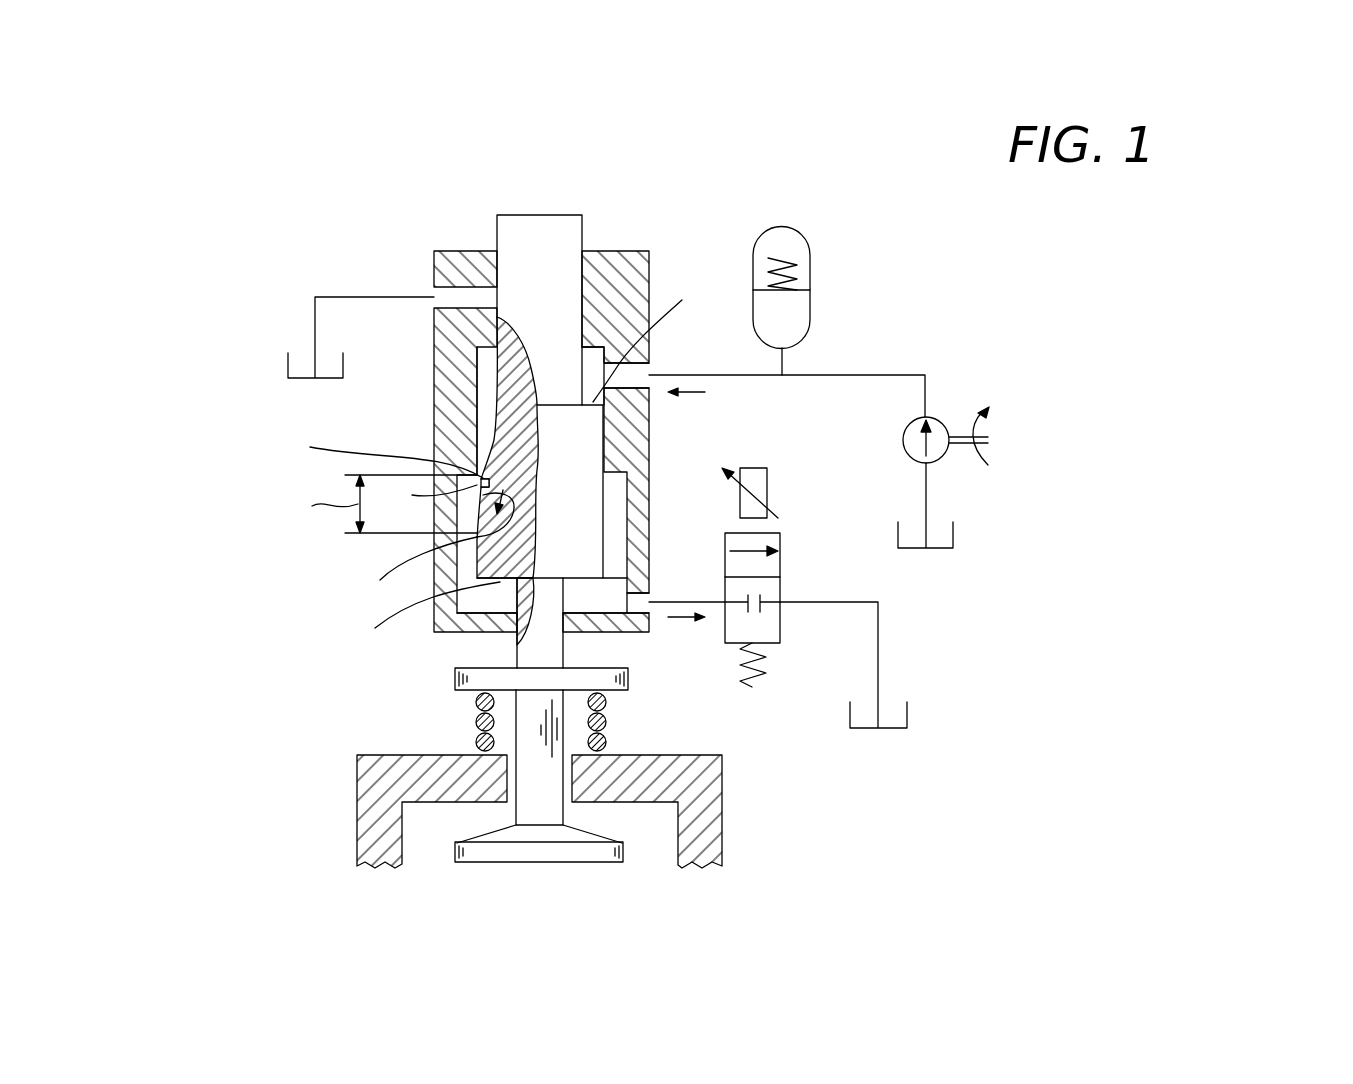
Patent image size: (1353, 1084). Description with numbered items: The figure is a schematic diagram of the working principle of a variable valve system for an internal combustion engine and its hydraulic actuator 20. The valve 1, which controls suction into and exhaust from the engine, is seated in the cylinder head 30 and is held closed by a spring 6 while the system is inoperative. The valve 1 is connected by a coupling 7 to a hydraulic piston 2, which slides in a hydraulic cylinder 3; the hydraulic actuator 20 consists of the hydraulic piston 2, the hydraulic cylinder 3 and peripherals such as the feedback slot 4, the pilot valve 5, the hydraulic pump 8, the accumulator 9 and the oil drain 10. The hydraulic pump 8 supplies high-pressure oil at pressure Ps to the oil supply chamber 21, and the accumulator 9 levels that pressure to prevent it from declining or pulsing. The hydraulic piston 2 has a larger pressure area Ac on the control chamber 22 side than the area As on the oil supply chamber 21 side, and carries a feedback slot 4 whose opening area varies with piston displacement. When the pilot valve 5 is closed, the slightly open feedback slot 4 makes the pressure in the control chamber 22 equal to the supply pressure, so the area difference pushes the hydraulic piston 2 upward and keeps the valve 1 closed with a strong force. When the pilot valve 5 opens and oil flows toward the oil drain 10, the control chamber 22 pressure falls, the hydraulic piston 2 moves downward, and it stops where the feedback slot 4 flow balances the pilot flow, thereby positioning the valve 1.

The valve 1 is at (480, 848).
The hydraulic piston 2 is at (500, 295).
The hydraulic cylinder 3 is at (440, 322).
The feedback slot 4 is at (487, 440).
The pilot valve 5 is at (775, 560).
The spring 6 is at (470, 718).
The coupling 7 is at (455, 678).
The hydraulic pump 8 is at (944, 455).
The accumulator 9 is at (810, 278).
The oil drain 10 is at (345, 365).
The hydraulic actuator 20 is at (236, 190).
The oil supply chamber 21 is at (590, 360).
The control chamber 22 is at (608, 602).
The cylinder head 30 is at (723, 820).